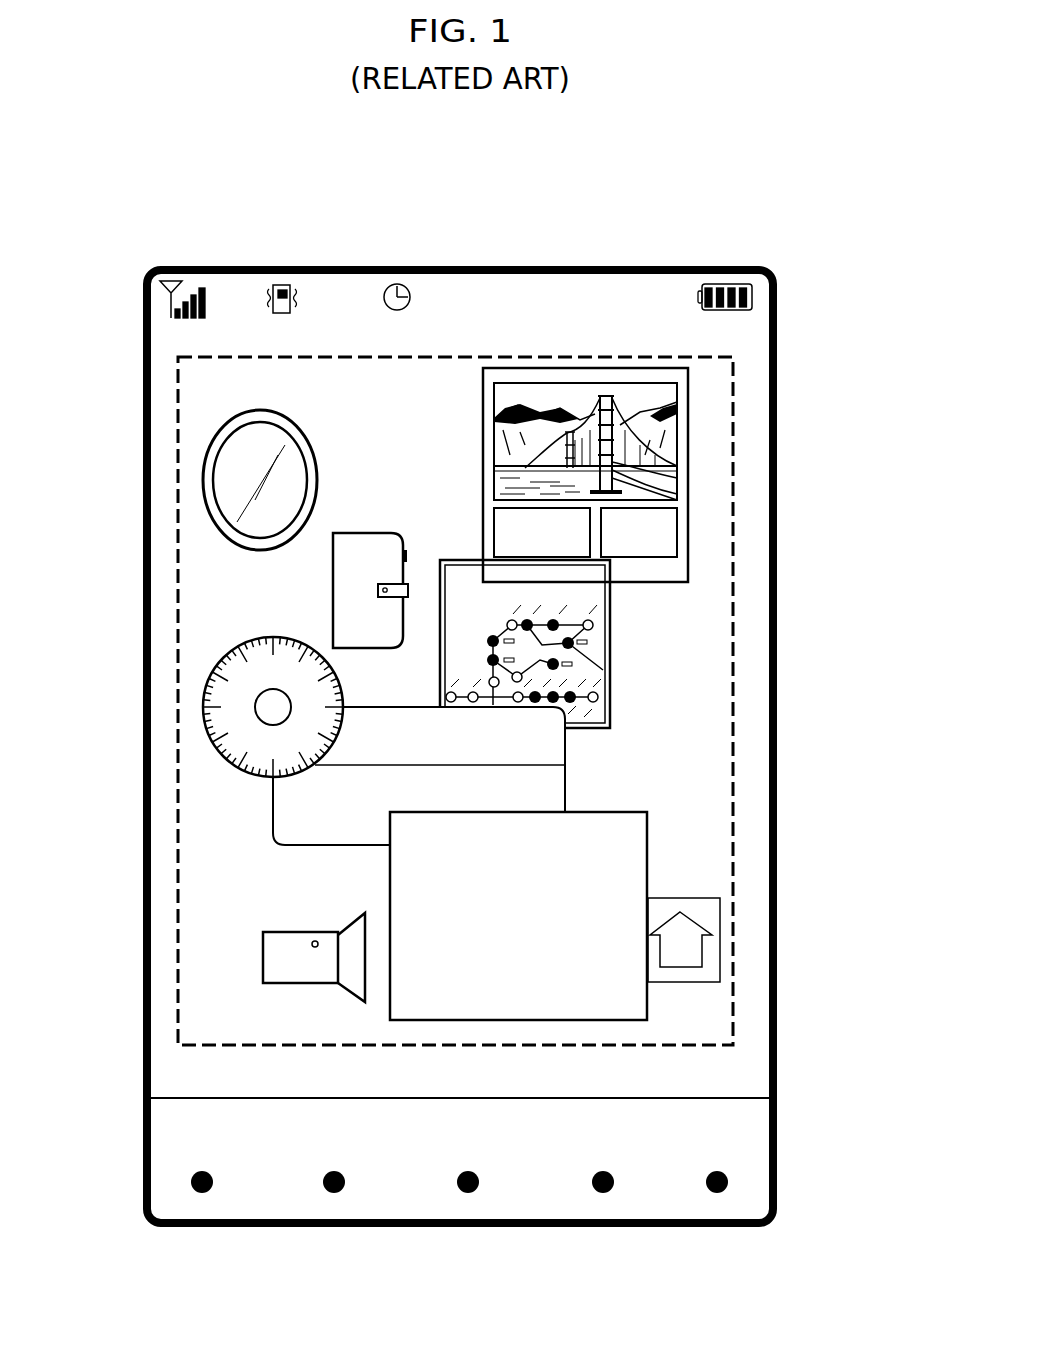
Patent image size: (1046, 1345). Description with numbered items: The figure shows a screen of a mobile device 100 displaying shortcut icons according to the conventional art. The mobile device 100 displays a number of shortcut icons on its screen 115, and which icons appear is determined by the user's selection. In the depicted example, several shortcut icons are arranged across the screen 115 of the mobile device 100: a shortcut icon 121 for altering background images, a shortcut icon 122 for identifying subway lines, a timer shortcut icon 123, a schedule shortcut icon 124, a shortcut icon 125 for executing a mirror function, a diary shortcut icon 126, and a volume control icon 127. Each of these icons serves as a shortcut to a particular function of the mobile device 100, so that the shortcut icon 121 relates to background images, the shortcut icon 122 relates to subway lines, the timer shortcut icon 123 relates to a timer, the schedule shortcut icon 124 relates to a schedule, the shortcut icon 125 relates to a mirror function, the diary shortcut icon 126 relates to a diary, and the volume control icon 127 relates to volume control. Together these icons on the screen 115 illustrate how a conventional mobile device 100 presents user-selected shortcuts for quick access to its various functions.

The mobile device 100 is at (800, 143).
The screen 115 is at (774, 268).
The shortcut icon for altering background images 121 is at (688, 487).
The shortcut icon for identifying subway lines 122 is at (610, 637).
The timer shortcut icon 123 is at (565, 773).
The schedule shortcut icon 124 is at (648, 853).
The shortcut icon for executing a mirror function 125 is at (237, 477).
The diary shortcut icon 126 is at (348, 592).
The volume control icon 127 is at (262, 955).